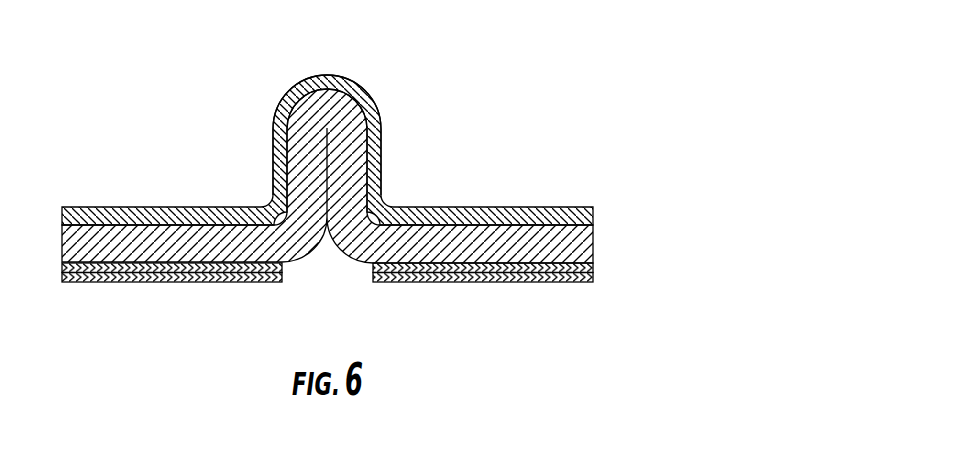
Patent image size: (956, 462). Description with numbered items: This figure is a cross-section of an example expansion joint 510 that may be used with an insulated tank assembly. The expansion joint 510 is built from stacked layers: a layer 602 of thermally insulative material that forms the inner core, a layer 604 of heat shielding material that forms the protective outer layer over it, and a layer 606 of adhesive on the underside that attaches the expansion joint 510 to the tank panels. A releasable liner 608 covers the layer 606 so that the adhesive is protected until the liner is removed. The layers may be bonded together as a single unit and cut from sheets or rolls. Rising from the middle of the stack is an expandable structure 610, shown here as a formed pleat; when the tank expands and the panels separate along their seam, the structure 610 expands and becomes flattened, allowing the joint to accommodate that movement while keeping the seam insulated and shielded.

The expansion joint 510 is at (357, 167).
The layer 602 is at (594, 240).
The layer 604 is at (512, 207).
The layer 606 is at (594, 270).
The releasable liner 608 is at (465, 283).
The expandable structure 610 is at (346, 78).